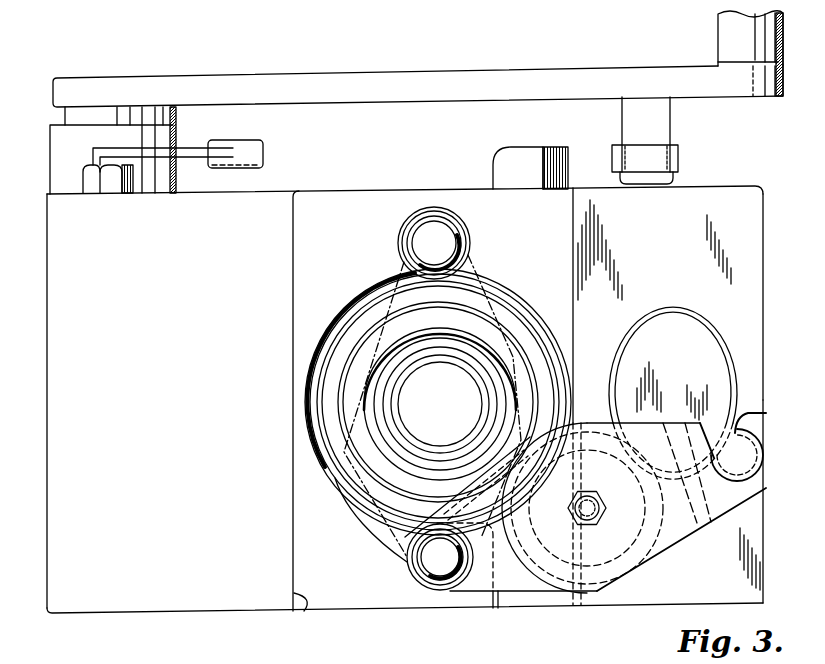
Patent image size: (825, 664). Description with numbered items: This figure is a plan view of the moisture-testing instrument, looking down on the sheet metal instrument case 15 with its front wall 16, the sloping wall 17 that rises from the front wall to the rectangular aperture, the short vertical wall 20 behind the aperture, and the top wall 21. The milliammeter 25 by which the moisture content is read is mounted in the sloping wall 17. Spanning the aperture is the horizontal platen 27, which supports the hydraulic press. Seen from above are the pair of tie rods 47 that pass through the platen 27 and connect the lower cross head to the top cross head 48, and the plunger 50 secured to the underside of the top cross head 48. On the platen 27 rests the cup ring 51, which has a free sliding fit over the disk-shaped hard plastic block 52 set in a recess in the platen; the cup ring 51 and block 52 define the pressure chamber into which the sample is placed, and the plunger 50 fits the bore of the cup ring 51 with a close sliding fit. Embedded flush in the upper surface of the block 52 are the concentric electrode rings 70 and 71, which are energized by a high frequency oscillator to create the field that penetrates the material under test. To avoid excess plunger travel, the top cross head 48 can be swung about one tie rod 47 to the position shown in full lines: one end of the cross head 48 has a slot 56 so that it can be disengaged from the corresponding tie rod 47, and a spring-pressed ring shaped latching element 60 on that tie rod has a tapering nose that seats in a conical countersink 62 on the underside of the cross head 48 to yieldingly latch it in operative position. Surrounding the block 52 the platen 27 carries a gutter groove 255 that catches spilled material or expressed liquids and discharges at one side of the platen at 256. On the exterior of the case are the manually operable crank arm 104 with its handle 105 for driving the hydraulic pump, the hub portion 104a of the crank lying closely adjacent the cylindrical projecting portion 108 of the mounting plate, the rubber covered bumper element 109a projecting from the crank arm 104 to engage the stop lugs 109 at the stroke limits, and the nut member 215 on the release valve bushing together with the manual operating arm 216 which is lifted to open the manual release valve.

The manually operable crank arm 104 is at (345, 83).
The hub portion of crank 104a is at (74, 116).
The handle 105 is at (722, 32).
The cylindrical projecting portion 108 is at (177, 141).
The stop lugs 109 is at (552, 128).
The rubber covered bumper element 109a is at (681, 158).
The nut member 215 is at (112, 184).
The manual operating arm 216 is at (262, 154).
The instrument case 15 is at (237, 620).
The front wall 16 is at (765, 556).
The sloping wall 17 is at (749, 270).
The short vertical wall 20 is at (306, 613).
The top wall 21 is at (163, 601).
The milliammeter 25 is at (714, 361).
The platen 27 is at (342, 205).
The tie rods 47 is at (434, 238).
The top cross head 48 is at (673, 555).
The plunger 50 is at (659, 534).
The cup ring 51 is at (507, 337).
The hard plastic block 52 is at (496, 364).
The slot 56 is at (393, 268).
The ring shaped latching element 60 is at (468, 224).
The conical countersink 62 is at (763, 456).
The electrode ring 70 is at (462, 350).
The electrode ring 71 is at (423, 357).
The gutter groove 255 is at (350, 327).
The discharge 256 is at (515, 598).